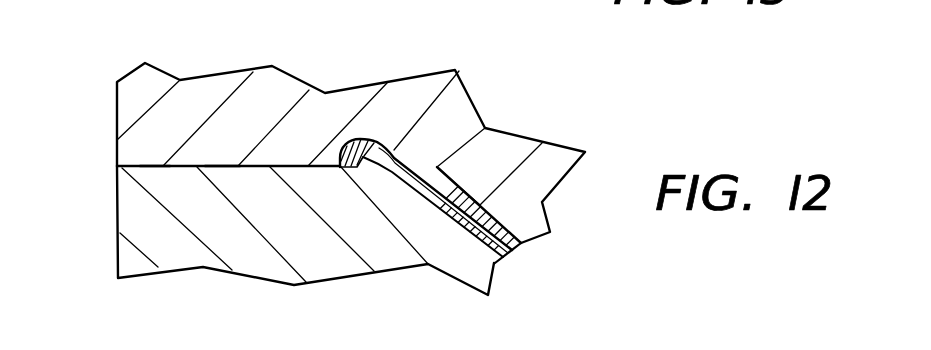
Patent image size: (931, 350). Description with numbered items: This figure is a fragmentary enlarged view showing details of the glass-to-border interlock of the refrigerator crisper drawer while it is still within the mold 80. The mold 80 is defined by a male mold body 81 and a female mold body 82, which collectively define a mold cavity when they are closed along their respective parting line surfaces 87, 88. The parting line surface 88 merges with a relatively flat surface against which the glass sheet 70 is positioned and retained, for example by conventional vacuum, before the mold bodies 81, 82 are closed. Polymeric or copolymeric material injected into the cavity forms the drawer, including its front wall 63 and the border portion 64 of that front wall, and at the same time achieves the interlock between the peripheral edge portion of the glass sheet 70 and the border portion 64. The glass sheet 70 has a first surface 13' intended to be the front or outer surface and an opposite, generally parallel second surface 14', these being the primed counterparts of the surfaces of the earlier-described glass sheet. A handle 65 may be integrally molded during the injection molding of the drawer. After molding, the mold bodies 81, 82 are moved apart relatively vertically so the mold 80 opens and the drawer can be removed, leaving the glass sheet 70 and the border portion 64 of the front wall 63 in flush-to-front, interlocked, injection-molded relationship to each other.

The mold 80 is at (117, 65).
The male mold body 81 is at (116, 98).
The female mold body 82 is at (116, 232).
The parting line surface 88 is at (155, 165).
The parting line surface 87 is at (222, 170).
The handle 65 is at (355, 139).
The front wall 63 is at (393, 177).
The border portion 64 is at (420, 198).
The glass sheet 70 is at (518, 249).
The second surface 14' is at (564, 203).
The first surface 13' is at (506, 262).